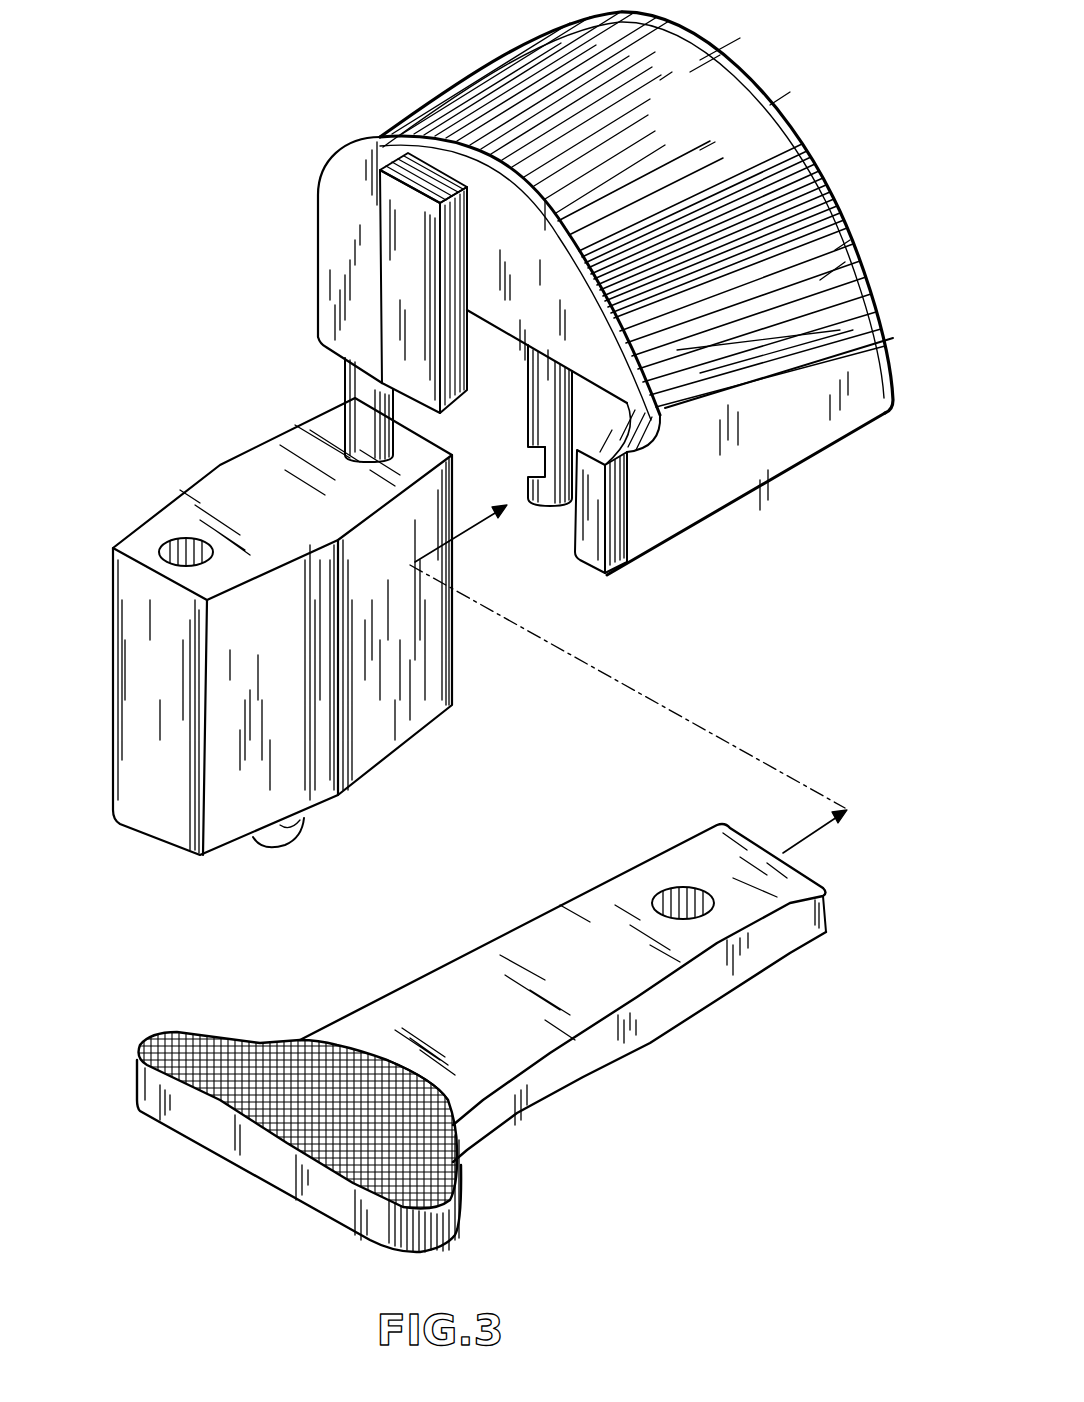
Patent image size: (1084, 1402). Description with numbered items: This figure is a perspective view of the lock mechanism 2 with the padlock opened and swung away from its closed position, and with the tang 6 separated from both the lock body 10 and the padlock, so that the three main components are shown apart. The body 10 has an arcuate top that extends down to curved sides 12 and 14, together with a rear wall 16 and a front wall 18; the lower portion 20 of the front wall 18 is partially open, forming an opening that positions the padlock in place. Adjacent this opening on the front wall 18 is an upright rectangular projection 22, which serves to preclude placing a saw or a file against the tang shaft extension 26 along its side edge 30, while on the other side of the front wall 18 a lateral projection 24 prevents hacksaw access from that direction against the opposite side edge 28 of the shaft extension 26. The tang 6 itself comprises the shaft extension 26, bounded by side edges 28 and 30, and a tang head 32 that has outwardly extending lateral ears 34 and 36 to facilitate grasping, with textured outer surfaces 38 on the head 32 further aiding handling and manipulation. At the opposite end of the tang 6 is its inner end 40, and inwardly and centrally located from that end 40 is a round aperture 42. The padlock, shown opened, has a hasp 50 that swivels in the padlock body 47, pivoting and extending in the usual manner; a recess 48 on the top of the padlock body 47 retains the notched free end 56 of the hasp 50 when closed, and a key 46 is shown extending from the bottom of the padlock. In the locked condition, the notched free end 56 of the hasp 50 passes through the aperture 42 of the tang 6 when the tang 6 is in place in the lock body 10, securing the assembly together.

The lock mechanism 2 is at (835, 611).
The tang 6 is at (378, 980).
The body 10 is at (632, 144).
The curved side 12 is at (778, 462).
The curved side 14 is at (318, 282).
The rear wall 16 is at (853, 223).
The front wall 18 is at (504, 249).
The lower portion 20 is at (515, 363).
The upright rectangular projection 22 is at (400, 222).
The lateral projection 24 is at (632, 535).
The tang shaft extension 26 is at (574, 993).
The side edge 28 is at (583, 1067).
The side edge 30 is at (478, 950).
The tang head 32 is at (262, 1175).
The lateral ear 34 is at (150, 1045).
The lateral ear 36 is at (445, 1228).
The textured outer surfaces 38 is at (417, 1078).
The inner end 40 is at (805, 872).
The round aperture 42 is at (703, 888).
The key 46 is at (292, 837).
The padlock body 47 is at (313, 787).
The recess 48 is at (170, 532).
The hasp 50 is at (345, 383).
The notched free end 56 is at (532, 465).